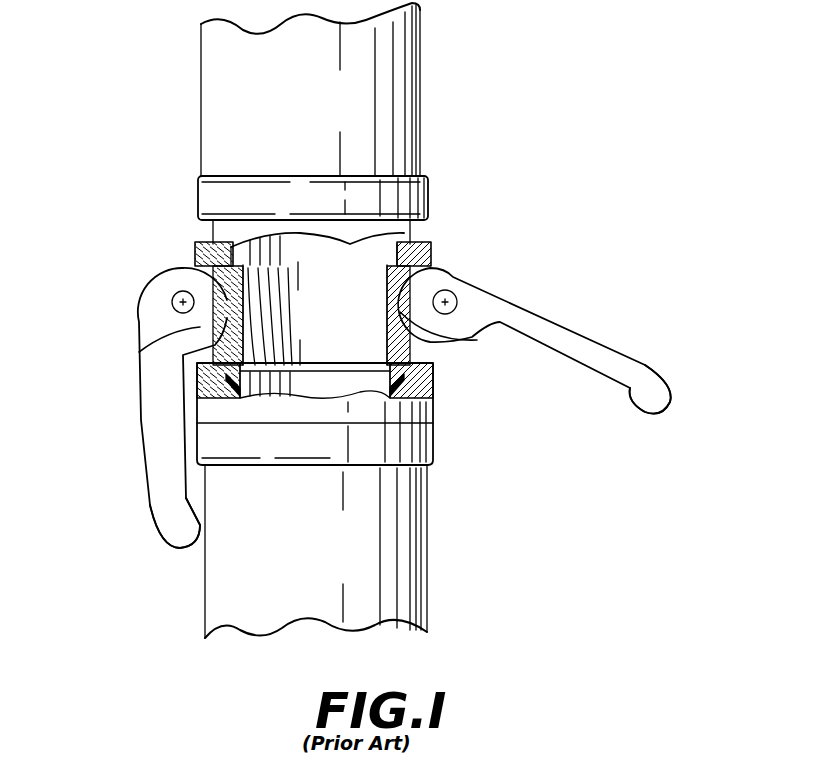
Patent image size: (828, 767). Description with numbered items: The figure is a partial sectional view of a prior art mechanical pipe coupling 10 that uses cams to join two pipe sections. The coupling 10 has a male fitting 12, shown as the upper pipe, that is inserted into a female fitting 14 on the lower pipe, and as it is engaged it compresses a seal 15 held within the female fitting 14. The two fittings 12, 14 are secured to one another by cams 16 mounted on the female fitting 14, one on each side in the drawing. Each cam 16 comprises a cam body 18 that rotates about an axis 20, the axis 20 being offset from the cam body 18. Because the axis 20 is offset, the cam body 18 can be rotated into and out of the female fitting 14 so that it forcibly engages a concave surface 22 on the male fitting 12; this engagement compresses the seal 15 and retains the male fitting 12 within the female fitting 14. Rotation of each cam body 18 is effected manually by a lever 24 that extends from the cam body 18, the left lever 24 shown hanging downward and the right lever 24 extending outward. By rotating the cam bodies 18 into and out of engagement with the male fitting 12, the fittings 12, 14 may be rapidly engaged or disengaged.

The mechanical coupling 10 is at (565, 160).
The male fitting 12 is at (283, 196).
The female fitting 14 is at (434, 410).
The seal 15 is at (284, 378).
The cam 16 is at (163, 322).
The cam body 18 is at (158, 344).
The axis 20 is at (177, 300).
The concave surface 22 is at (216, 246).
The lever 24 is at (170, 508).